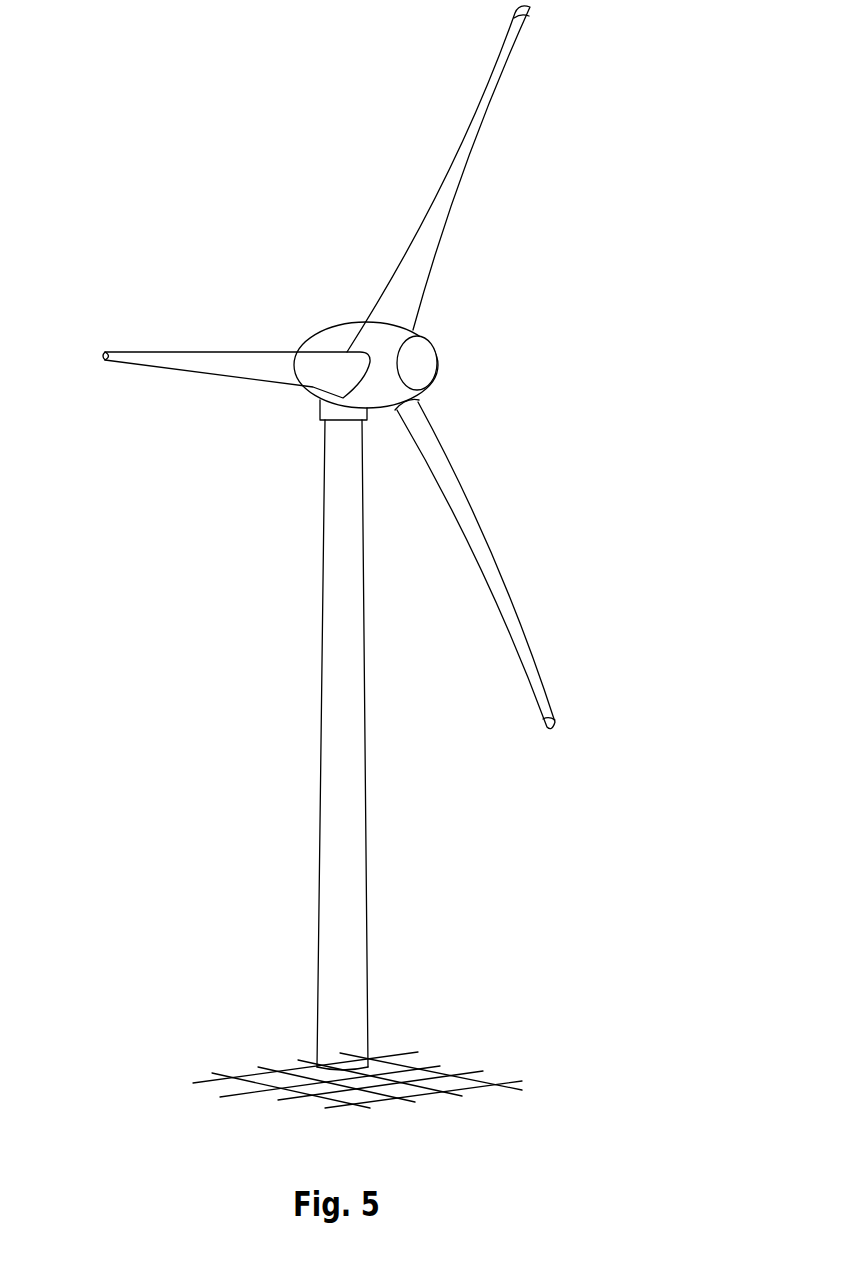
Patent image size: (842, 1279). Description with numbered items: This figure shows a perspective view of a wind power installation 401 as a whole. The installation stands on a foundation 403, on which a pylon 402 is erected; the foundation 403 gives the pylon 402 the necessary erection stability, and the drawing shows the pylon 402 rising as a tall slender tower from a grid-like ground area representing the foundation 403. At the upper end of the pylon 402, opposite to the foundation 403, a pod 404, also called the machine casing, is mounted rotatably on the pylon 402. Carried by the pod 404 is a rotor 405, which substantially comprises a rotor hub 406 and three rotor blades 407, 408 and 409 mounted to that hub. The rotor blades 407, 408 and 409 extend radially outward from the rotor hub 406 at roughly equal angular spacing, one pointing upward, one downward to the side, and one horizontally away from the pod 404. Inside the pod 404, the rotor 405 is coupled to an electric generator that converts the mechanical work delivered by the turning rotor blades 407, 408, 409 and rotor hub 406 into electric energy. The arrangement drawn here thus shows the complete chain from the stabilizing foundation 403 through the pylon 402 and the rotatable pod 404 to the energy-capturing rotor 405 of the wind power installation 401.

The wind turbine 401 is at (153, 165).
The pylon 402 is at (349, 846).
The foundation 403 is at (392, 1071).
The pod 404 is at (323, 343).
The rotor 405 is at (462, 330).
The rotor hub 406 is at (377, 335).
The rotor blade 407 is at (478, 127).
The rotor blade 408 is at (488, 577).
The rotor blade 409 is at (165, 367).